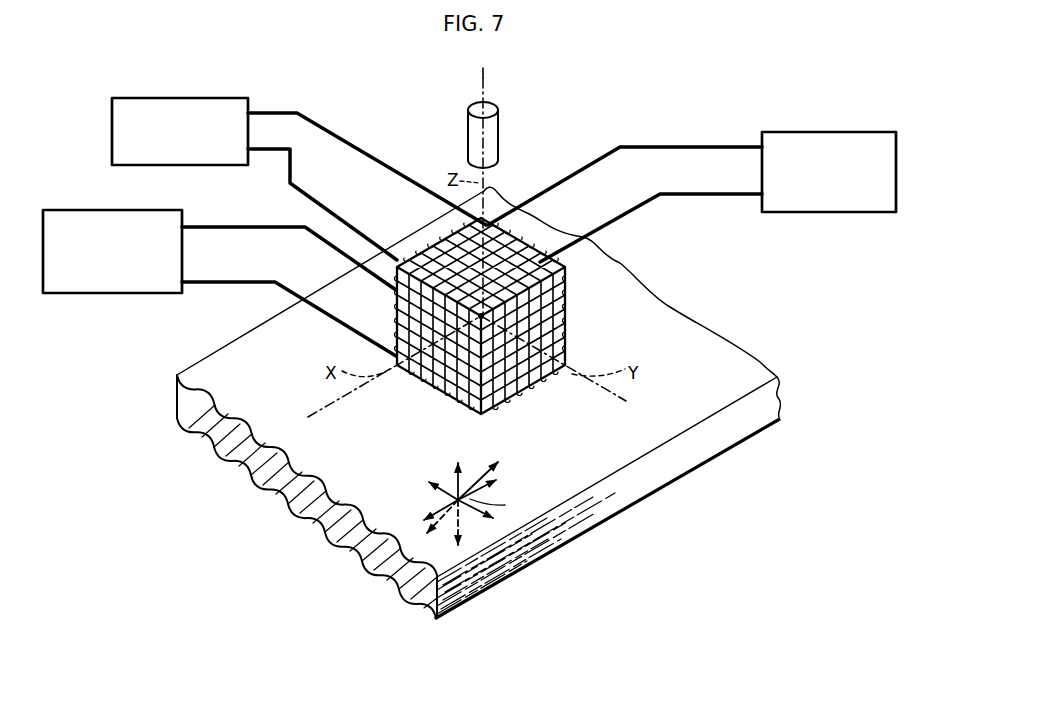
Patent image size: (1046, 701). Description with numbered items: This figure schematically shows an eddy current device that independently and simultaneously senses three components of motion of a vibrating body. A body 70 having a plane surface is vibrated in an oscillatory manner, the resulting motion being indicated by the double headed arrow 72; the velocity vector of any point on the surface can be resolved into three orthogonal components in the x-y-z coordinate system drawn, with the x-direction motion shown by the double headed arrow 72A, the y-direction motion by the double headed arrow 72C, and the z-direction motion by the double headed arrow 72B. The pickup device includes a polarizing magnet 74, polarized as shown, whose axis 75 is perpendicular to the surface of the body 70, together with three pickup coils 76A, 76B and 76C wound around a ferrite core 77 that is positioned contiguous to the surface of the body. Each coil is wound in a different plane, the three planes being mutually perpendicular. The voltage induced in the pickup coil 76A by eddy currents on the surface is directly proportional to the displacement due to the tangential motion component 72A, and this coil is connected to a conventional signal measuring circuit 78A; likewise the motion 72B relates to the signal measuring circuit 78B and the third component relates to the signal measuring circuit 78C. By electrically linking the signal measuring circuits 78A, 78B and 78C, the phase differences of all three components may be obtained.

The body 70 is at (622, 485).
The double headed arrow 72 is at (478, 474).
The double headed arrow 72A is at (478, 489).
The double headed arrow 72B is at (455, 485).
The double headed arrow 72C is at (445, 491).
The polarizing magnet 74 is at (498, 135).
The axis 75 is at (488, 72).
The pickup coil 76A is at (437, 242).
The pickup coil 76B is at (560, 322).
The pickup coil 76C is at (520, 262).
The ferrite core 77 is at (522, 209).
The signal measuring circuit 78A is at (212, 100).
The signal measuring circuit 78B is at (143, 283).
The signal measuring circuit 78C is at (852, 132).